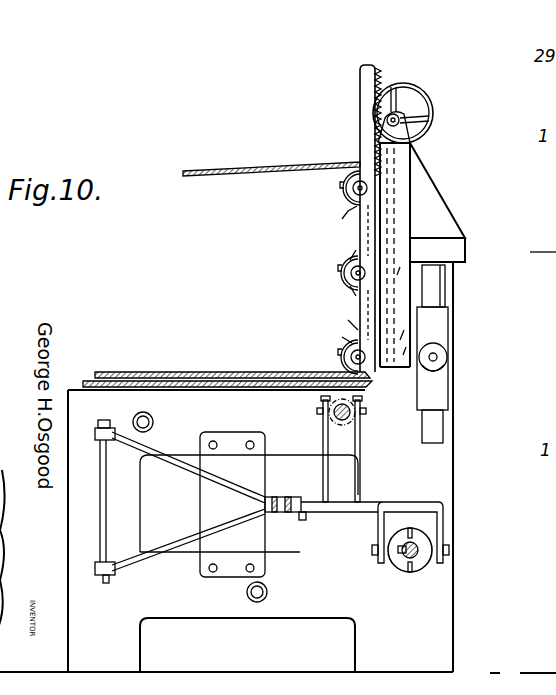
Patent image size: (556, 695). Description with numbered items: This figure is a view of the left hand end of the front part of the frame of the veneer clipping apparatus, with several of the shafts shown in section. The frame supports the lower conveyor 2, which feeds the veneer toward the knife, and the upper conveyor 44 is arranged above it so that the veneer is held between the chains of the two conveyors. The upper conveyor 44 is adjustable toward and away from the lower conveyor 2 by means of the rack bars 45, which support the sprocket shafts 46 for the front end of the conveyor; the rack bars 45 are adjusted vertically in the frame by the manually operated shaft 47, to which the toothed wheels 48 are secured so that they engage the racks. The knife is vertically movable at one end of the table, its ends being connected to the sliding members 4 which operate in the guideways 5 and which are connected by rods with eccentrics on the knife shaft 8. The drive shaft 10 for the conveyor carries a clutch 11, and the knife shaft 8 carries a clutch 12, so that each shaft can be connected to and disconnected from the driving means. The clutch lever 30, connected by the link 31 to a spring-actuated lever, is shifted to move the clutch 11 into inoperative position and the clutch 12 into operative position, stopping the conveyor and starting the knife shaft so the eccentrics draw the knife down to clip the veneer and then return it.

The lower conveyor 2 is at (143, 388).
The sliding members 4 is at (438, 330).
The guideways 5 is at (438, 286).
The shaft 8 is at (413, 548).
The drive shaft 10 is at (362, 412).
The clutch 11 is at (322, 430).
The clutch 12 is at (420, 575).
The clutch lever 30 is at (193, 462).
The link 31 is at (302, 513).
The upper conveyor 44 is at (220, 171).
The rack bars 45 is at (371, 63).
The sprocket shafts 46 is at (350, 262).
The manually operated shaft 47 is at (402, 113).
The toothed wheels 48 is at (401, 95).